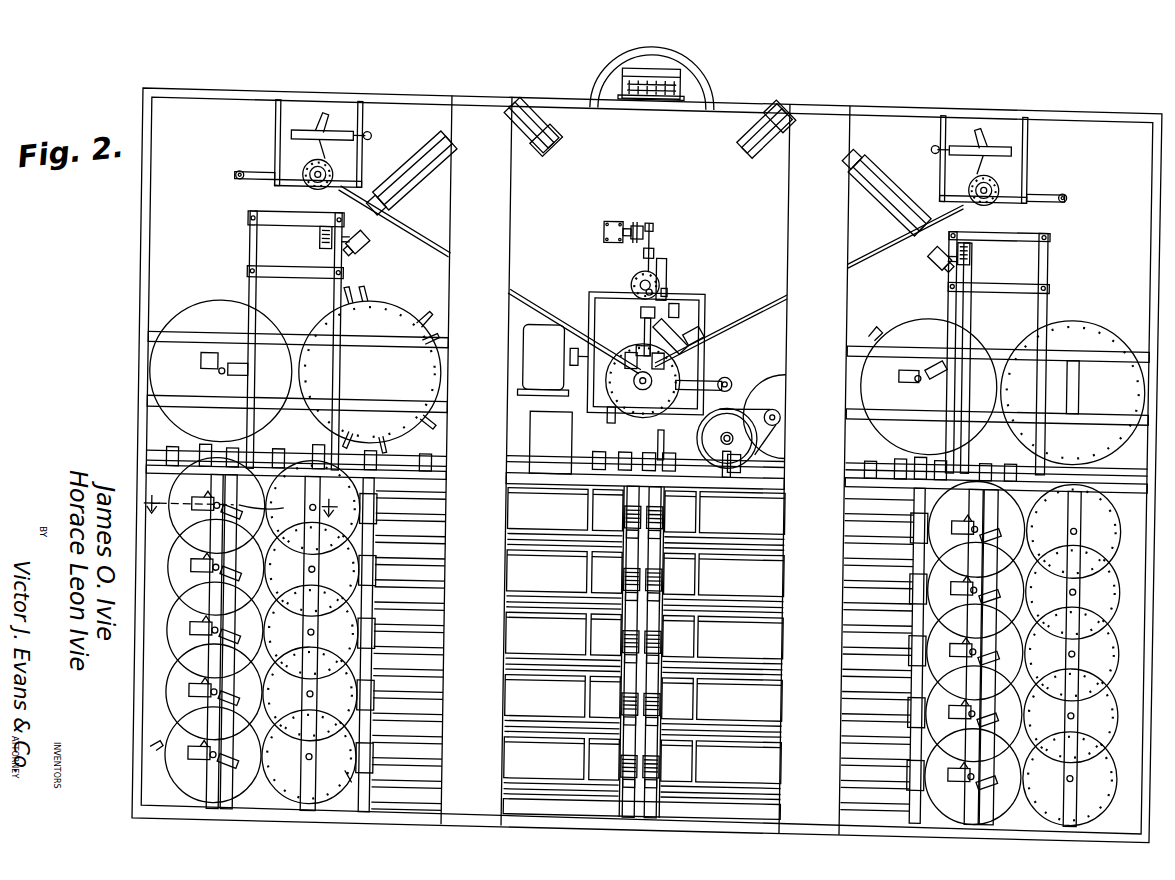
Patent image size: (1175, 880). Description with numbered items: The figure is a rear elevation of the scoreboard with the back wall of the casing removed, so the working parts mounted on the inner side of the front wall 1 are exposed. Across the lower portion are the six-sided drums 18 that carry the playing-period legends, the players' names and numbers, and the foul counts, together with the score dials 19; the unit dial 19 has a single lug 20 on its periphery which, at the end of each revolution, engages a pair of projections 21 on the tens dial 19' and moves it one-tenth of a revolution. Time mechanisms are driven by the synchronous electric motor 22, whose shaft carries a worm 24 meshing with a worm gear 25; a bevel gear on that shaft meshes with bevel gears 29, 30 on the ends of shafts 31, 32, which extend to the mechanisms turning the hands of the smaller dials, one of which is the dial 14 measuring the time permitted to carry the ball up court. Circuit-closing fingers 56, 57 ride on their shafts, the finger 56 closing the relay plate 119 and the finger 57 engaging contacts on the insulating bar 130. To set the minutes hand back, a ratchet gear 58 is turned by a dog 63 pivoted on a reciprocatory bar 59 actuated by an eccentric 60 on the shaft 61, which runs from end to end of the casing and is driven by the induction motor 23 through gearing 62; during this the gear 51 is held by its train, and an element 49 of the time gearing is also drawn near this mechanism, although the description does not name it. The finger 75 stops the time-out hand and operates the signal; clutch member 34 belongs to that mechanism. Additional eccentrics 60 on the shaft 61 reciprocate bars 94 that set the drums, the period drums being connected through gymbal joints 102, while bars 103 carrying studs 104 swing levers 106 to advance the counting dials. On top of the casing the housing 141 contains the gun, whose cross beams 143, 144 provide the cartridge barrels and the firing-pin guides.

The front wall 1 is at (168, 98).
The dial 14 is at (244, 518).
The drums 18 is at (530, 155).
The dials 19 is at (584, 562).
The tens dial 19' is at (703, 563).
The projection or lug 20 is at (270, 316).
The projections 21 is at (410, 300).
The synchronous electric motor 22 is at (553, 360).
The induction motor 23 is at (772, 376).
The worm 24 is at (642, 344).
The worm gear 25 is at (704, 360).
The bevel gear 29 is at (612, 378).
The bevel gear 30 is at (654, 398).
The shaft 31 is at (540, 308).
The shaft 32 is at (862, 244).
The clutch member 34 is at (622, 392).
The block 49 is at (644, 306).
The gear 51 is at (640, 262).
The circuit-closing finger 56 is at (651, 220).
The circuit-closing finger 57 is at (672, 333).
The ratchet gear 58 is at (664, 270).
The reciprocatory bar 59 is at (670, 255).
The eccentric 60 is at (660, 446).
The shaft 61 is at (558, 450).
The gearing 62 is at (726, 443).
The dog 63 is at (672, 283).
The finger 75 is at (318, 148).
The reciprocatory bar 94 is at (386, 586).
The gymbal joints 102 is at (350, 232).
The bars 103 is at (230, 684).
The studs 104 is at (246, 766).
The lever 106 is at (225, 716).
The frame or plate 119 is at (633, 212).
The plate or bar of insulation 130 is at (704, 322).
The housing 141 is at (690, 72).
The cross beam 143 is at (662, 58).
The cross beam 144 is at (626, 76).